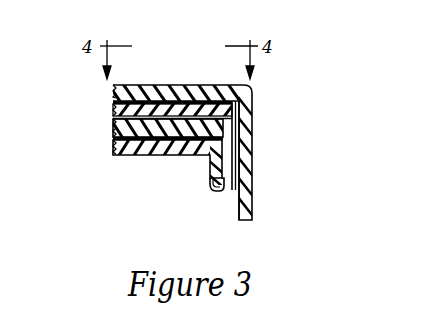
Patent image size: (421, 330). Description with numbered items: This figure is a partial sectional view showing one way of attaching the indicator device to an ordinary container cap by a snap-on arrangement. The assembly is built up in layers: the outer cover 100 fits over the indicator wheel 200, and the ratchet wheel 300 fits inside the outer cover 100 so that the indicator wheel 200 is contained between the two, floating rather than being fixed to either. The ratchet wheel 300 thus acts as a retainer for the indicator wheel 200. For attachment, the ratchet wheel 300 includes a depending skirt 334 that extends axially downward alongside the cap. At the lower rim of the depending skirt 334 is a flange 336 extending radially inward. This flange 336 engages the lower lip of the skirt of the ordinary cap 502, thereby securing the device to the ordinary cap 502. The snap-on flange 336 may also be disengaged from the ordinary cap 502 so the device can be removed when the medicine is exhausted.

The outer cover 100 is at (248, 210).
The indicator wheel 200 is at (113, 107).
The ratchet wheel 300 is at (212, 129).
The depending skirt 334 is at (246, 149).
The flange 336 is at (222, 191).
The ordinary cap 502 is at (162, 148).